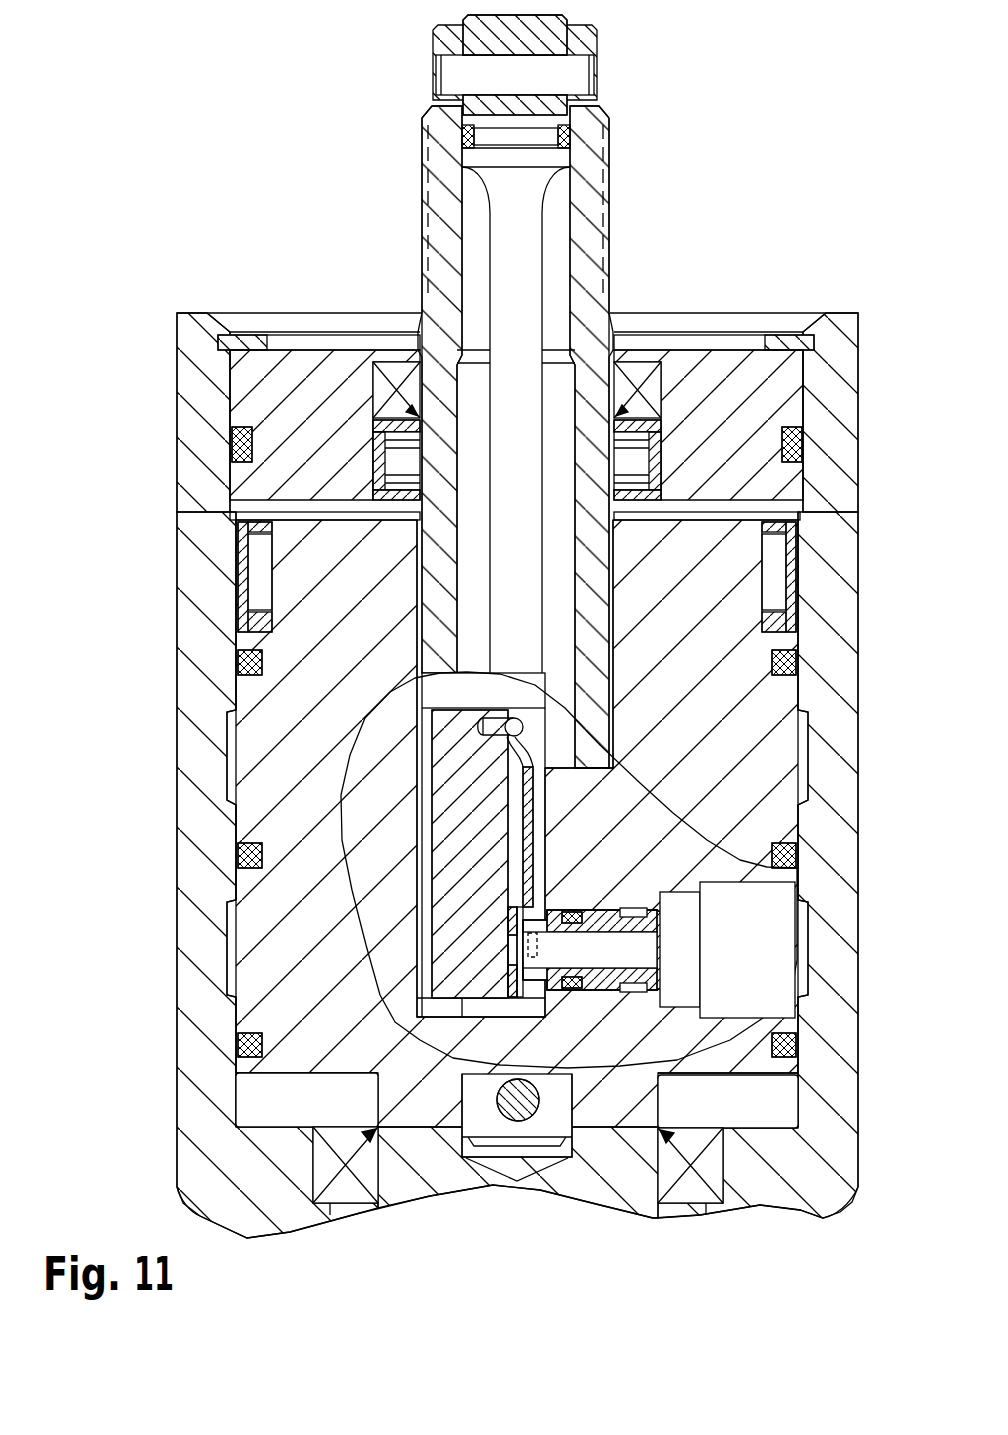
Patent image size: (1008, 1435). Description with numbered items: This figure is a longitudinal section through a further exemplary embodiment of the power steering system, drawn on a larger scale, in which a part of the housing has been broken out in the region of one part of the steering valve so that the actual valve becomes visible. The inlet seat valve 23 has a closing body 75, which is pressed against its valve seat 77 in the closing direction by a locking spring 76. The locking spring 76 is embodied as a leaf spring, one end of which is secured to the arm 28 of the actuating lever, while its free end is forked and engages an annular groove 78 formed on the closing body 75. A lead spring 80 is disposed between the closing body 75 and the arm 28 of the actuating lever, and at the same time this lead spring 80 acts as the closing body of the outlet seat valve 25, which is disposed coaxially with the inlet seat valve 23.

The arm 28 is at (455, 885).
The locking spring 76 is at (533, 838).
The valve seat 77 is at (663, 988).
The lead spring 80 is at (516, 1005).
The outlet seat valve 25 is at (509, 972).
The annular groove 78 is at (538, 983).
The closing body 75 is at (590, 987).
The inlet seat valve 23 is at (652, 997).